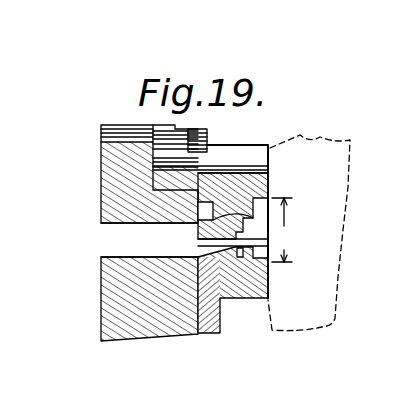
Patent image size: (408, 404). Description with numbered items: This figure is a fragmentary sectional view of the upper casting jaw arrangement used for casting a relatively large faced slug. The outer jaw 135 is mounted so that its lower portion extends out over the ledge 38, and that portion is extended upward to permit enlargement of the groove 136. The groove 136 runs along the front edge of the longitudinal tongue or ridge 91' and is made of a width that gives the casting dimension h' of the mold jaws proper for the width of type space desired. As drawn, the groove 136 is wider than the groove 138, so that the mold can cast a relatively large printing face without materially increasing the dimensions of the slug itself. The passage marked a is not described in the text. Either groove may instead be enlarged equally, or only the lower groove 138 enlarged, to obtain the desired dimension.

The ledge 38 is at (170, 197).
The longitudinal tongue or ridge 91' is at (211, 236).
The outer jaw 135 is at (262, 178).
The groove 136 is at (262, 207).
The groove 138 is at (262, 260).
The channel a is at (136, 240).
The casting dimension h' is at (285, 230).